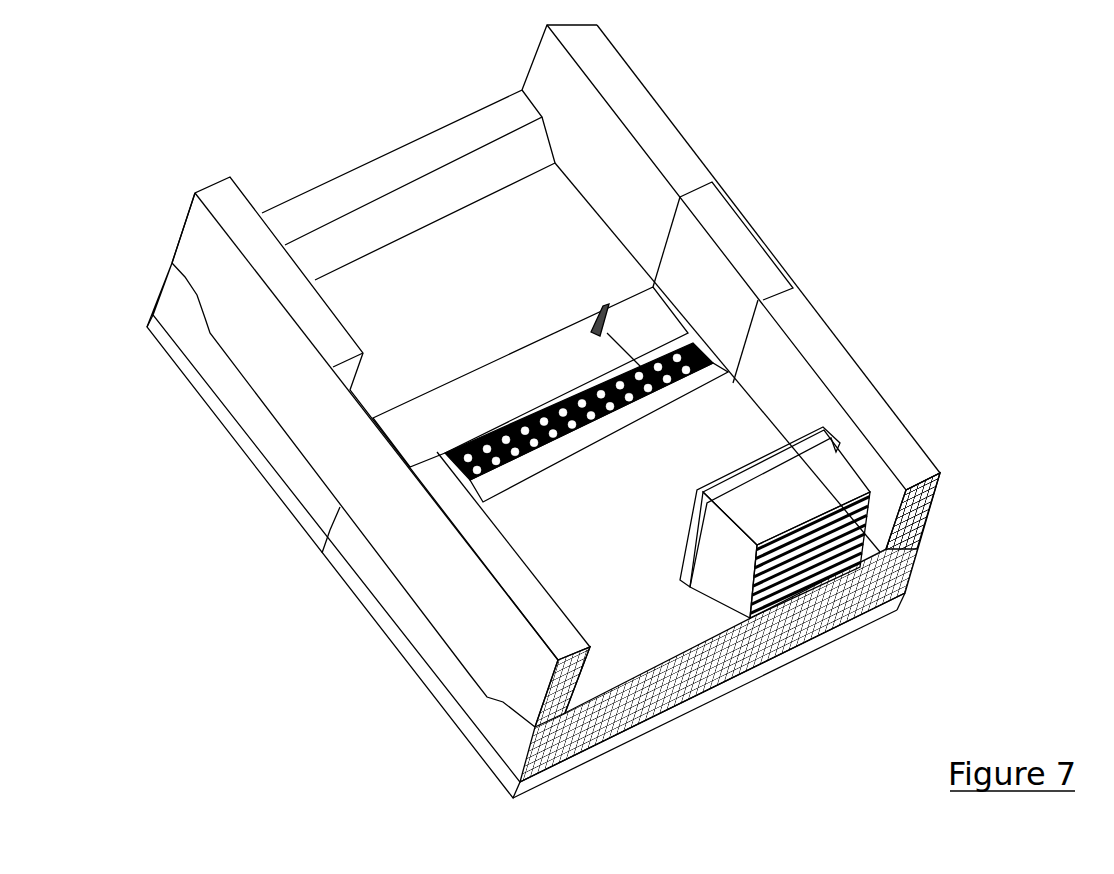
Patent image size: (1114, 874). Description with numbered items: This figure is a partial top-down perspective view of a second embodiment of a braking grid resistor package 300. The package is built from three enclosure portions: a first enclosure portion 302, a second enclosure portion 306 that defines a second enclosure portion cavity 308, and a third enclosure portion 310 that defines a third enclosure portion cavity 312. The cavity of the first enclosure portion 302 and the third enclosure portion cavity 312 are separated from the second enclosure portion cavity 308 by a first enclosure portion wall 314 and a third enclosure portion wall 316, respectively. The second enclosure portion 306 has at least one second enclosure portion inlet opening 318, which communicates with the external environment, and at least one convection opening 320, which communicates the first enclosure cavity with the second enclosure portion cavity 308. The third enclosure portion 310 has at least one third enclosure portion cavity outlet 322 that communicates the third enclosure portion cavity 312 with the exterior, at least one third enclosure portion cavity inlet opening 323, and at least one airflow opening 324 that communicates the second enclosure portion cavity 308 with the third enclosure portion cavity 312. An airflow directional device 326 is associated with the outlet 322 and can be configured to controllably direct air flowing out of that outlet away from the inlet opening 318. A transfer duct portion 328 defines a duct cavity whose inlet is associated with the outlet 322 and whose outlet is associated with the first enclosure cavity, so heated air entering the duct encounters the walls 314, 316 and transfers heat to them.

The braking grid resistor package 300 is at (621, 419).
The first enclosure portion 302 is at (526, 495).
The second enclosure portion 306 is at (381, 452).
The second enclosure portion cavity 308 is at (655, 695).
The third enclosure portion 310 is at (412, 152).
The third enclosure portion cavity 312 is at (488, 314).
The first enclosure portion wall 314 is at (786, 714).
The third enclosure portion wall 316 is at (958, 616).
The second enclosure portion inlet opening 318 is at (637, 762).
The convection opening 320 is at (586, 442).
The third enclosure portion cavity outlet 322 is at (793, 288).
The third enclosure portion cavity inlet opening 323 is at (990, 455).
The airflow opening 324 is at (602, 309).
The airflow directional device 326 is at (808, 555).
The transfer duct portion 328 is at (708, 519).